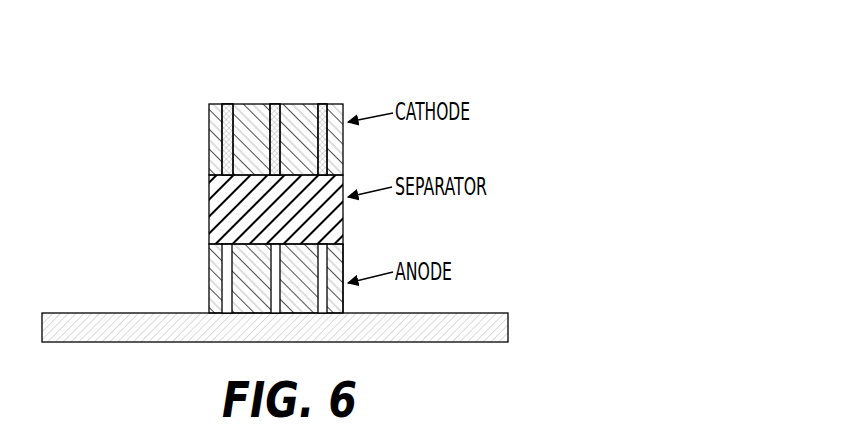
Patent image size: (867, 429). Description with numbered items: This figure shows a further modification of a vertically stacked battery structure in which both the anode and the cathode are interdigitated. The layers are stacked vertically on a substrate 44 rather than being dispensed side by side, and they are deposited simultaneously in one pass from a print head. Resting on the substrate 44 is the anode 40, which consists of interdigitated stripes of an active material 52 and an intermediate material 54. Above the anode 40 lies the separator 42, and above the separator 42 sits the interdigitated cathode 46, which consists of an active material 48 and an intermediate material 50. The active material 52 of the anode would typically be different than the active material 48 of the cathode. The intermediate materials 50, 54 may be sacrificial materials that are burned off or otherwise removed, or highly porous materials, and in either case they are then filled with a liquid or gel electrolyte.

The anode 40 is at (277, 276).
The separator 42 is at (209, 210).
The substrate 44 is at (103, 332).
The interdigitated cathode 46 is at (289, 121).
The active material 48 is at (250, 104).
The intermediate material 50 is at (228, 104).
The active material 52 is at (343, 302).
The intermediate material 54 is at (322, 268).